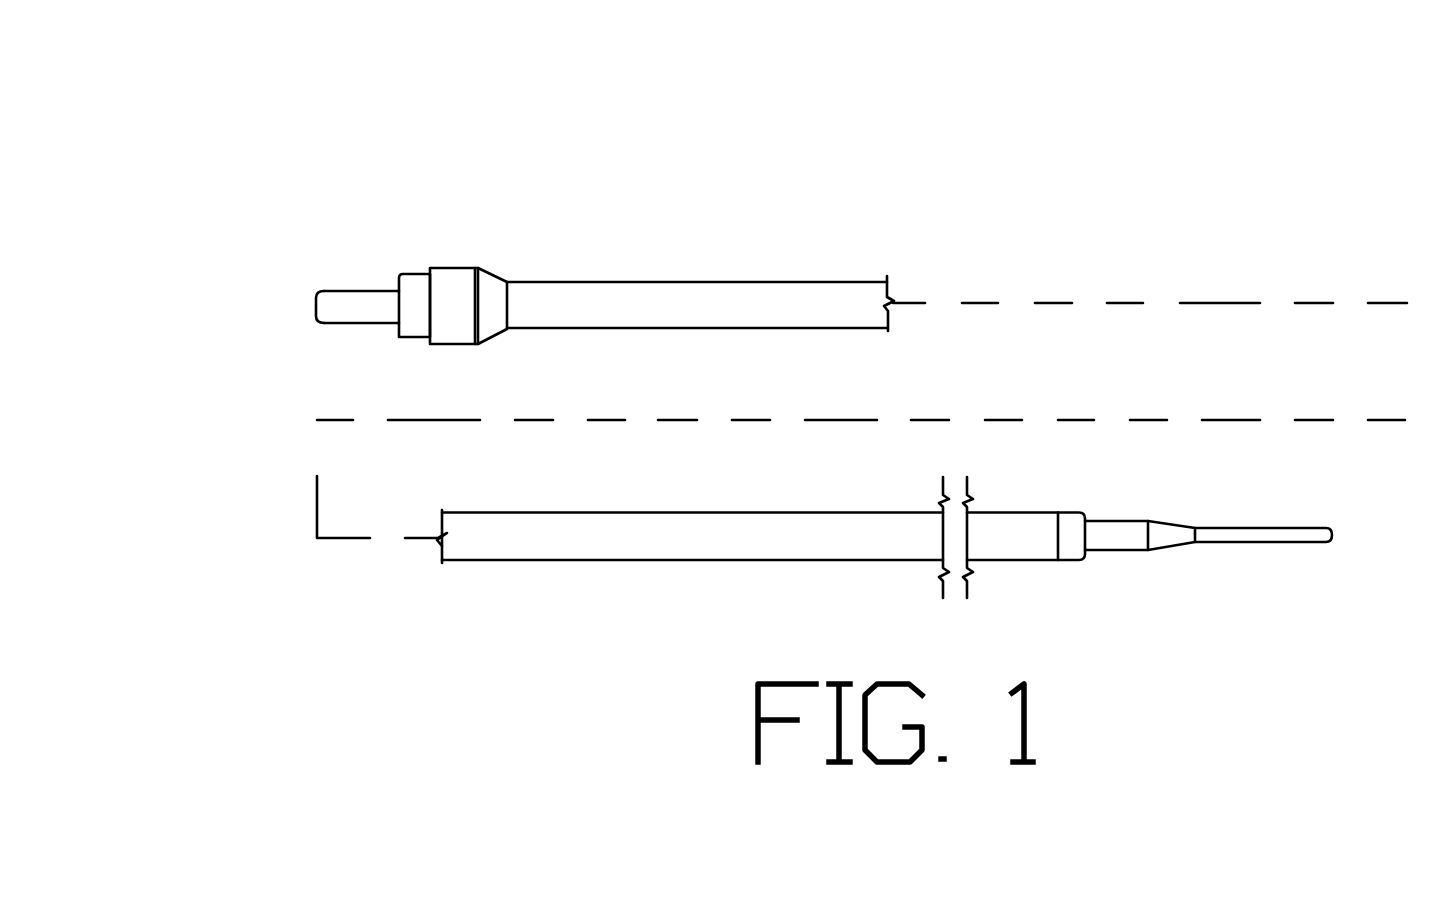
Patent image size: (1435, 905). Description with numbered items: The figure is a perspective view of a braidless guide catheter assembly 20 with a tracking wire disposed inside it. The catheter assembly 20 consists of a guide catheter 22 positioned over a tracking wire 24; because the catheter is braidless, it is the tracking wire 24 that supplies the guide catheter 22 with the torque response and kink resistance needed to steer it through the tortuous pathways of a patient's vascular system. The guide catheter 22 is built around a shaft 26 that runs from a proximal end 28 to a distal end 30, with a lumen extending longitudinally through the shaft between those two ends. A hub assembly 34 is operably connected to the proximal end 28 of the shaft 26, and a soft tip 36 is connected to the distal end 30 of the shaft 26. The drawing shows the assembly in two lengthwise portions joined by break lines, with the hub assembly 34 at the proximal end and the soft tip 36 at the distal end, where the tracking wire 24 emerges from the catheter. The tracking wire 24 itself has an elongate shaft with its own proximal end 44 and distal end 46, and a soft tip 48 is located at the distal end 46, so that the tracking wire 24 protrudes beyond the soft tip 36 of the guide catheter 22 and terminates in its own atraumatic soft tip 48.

The braidless guide catheter assembly 20 is at (255, 192).
The guide catheter 22 is at (627, 222).
The tracking wire 24 is at (362, 323).
The shaft 26 is at (720, 282).
The proximal end 28 is at (543, 282).
The distal end 30 is at (1045, 510).
The hub assembly 34 is at (460, 345).
The soft tip 36 is at (1075, 560).
The proximal end 44 is at (330, 287).
The distal end 46 is at (1152, 517).
The soft tip 48 is at (1317, 542).